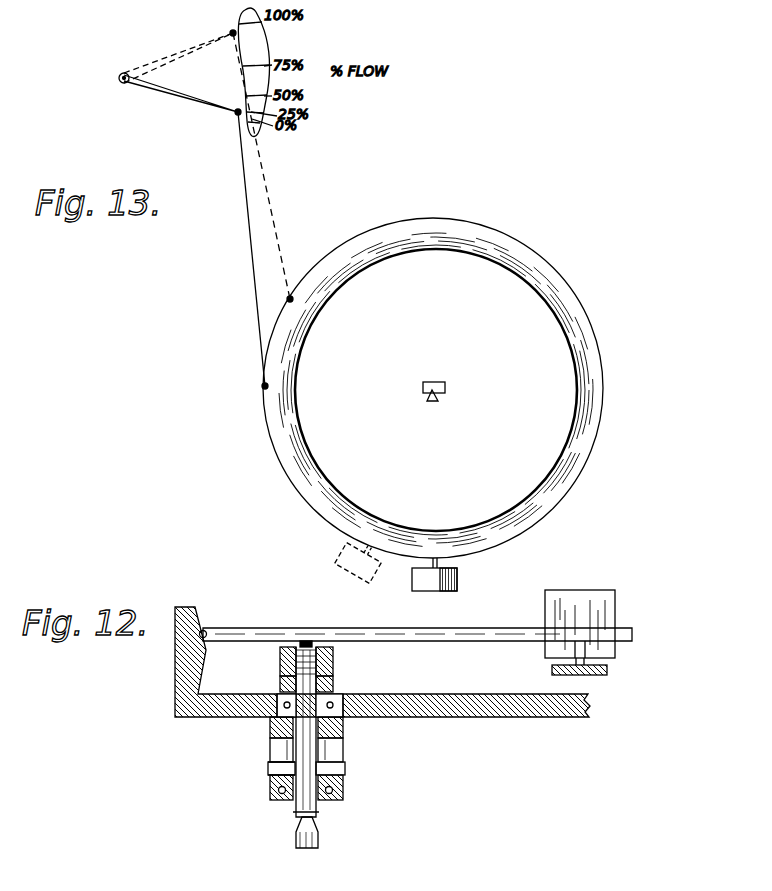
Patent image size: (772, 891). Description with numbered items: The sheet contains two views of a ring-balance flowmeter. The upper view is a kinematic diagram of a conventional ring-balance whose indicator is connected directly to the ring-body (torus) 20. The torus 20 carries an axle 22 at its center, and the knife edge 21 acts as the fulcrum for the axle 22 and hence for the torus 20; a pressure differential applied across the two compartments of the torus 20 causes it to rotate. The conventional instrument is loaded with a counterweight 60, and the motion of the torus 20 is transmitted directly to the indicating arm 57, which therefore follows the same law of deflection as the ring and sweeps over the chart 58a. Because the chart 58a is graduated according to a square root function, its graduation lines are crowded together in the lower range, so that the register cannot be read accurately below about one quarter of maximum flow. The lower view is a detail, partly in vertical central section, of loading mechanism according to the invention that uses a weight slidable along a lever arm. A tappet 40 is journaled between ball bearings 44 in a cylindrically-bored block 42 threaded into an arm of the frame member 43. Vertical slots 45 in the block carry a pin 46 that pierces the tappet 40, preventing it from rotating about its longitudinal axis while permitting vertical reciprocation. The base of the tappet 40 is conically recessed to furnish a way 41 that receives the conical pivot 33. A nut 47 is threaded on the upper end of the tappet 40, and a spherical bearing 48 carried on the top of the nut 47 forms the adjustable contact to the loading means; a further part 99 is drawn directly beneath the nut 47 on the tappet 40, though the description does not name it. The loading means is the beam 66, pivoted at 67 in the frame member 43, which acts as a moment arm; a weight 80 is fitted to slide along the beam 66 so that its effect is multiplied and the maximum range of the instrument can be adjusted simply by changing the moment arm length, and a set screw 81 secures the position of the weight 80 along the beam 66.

In FIG. 13, the ring-body (torus) 20 is at (580, 456).
In FIG. 13, the knife edge 21 is at (436, 398).
In FIG. 13, the axle 22 is at (445, 387).
In FIG. 12, the conical pivot 33 is at (300, 825).
In FIG. 12, the tappet 40 is at (276, 761).
In FIG. 12, the way 41 is at (318, 812).
In FIG. 12, the cylindrically-bored block 42 is at (270, 731).
In FIG. 12, the frame member 43 is at (506, 718).
In FIG. 12, the ball bearings 44 is at (277, 694).
In FIG. 12, the vertical slots 45 is at (278, 751).
In FIG. 12, the pin 46 is at (345, 768).
In FIG. 12, the nut 47 is at (333, 665).
In FIG. 12, the spherical bearing 48 is at (313, 645).
In FIG. 13, the indicating arm 57 is at (166, 62).
In FIG. 13, the chart 58a is at (258, 48).
In FIG. 13, the counterweight 60 is at (458, 576).
In FIG. 12, the beam 66 is at (260, 628).
In FIG. 12, the pivot 67 is at (207, 627).
In FIG. 12, the weight 80 is at (600, 609).
In FIG. 12, the set screw 81 is at (608, 671).
In FIG. 12, the flange 99 is at (333, 684).